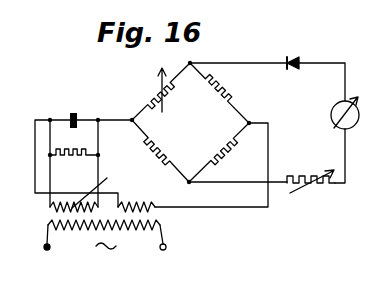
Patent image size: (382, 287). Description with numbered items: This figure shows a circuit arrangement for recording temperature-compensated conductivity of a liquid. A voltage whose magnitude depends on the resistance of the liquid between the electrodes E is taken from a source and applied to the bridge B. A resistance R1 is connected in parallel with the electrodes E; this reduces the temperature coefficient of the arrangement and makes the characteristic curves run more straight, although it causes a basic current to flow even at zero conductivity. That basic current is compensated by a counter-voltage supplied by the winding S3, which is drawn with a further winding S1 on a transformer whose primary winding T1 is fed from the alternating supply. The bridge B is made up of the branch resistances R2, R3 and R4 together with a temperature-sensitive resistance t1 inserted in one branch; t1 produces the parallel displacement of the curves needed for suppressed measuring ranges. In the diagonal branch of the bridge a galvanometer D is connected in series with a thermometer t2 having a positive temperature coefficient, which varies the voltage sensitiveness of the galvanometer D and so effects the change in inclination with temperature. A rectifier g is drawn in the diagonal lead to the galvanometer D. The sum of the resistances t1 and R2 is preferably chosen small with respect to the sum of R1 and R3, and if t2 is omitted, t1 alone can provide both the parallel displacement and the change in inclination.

The electrodes E is at (73, 110).
The resistance R1 is at (74, 166).
The resistance R2 is at (160, 151).
The resistance R3 is at (219, 152).
The resistance R4 is at (219, 93).
The bridge B is at (190, 122).
The temperature-sensitive resistance t1 is at (161, 91).
The thermometer t2 is at (311, 175).
The rectifier g is at (294, 57).
The galvanometer D is at (331, 113).
The secondary winding S1 is at (155, 207).
The winding S3 is at (87, 194).
The transformer primary winding T1 is at (58, 212).